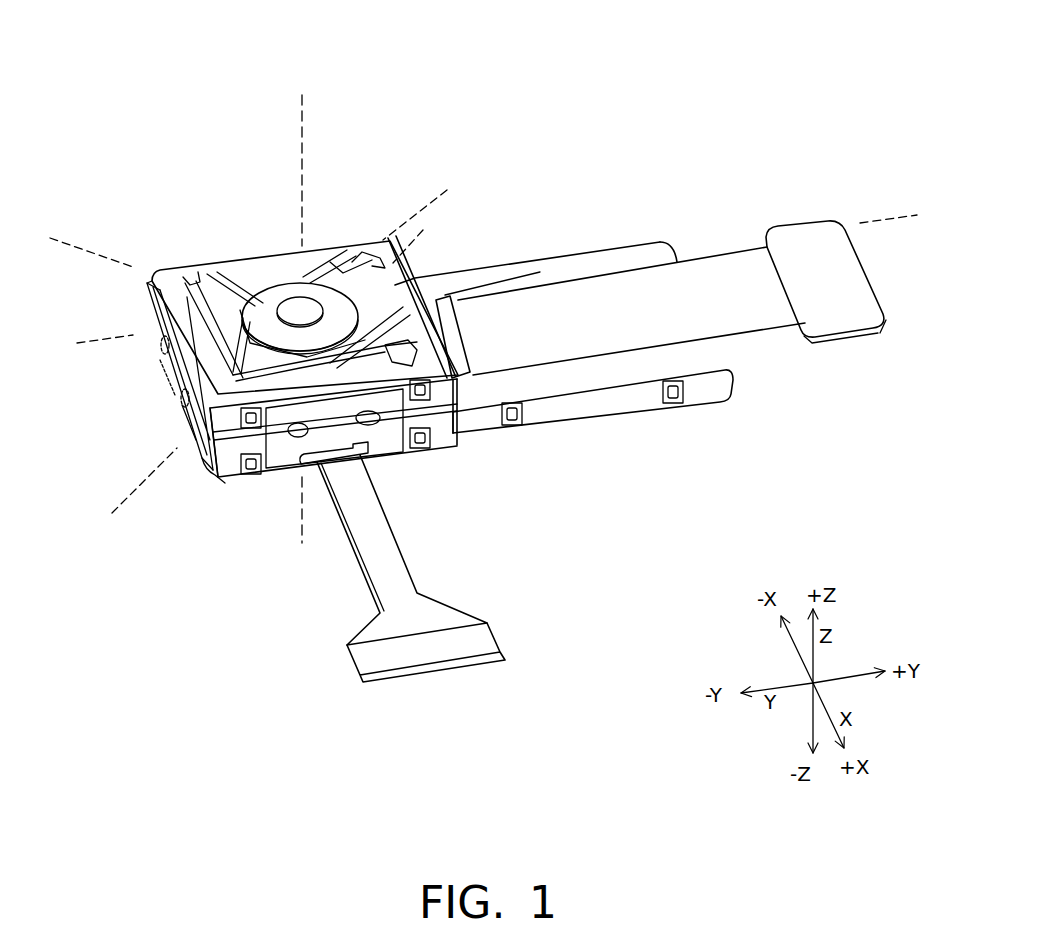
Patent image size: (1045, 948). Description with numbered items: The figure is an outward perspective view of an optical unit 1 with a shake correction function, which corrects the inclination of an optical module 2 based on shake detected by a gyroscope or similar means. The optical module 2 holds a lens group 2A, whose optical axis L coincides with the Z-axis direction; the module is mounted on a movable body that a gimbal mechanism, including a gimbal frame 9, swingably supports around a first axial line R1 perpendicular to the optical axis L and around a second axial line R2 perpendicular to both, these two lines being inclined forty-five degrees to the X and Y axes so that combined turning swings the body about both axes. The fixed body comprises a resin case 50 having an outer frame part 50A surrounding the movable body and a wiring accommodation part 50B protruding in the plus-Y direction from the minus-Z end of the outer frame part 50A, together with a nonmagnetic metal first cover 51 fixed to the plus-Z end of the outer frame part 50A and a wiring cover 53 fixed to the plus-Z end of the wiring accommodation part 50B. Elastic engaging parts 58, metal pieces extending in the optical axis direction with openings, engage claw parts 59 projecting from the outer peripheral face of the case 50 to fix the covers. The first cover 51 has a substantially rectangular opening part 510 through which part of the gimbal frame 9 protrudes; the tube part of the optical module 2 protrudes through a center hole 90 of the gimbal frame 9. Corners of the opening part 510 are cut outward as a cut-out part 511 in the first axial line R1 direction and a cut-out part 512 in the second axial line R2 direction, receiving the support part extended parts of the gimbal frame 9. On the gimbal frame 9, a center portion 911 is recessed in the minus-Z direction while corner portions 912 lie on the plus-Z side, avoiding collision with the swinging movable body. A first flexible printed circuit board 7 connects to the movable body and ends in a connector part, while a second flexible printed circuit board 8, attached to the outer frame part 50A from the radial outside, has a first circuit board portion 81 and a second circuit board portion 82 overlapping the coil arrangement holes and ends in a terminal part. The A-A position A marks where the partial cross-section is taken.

The optical unit with a shake correction function 1 is at (647, 100).
The optical module 2 is at (273, 297).
The lens group 2A is at (301, 311).
The first flexible printed circuit board 7 is at (740, 312).
The second flexible printed circuit board 8 is at (405, 570).
The gimbal frame 9 is at (253, 292).
The case 50 is at (667, 543).
The outer frame part 50A is at (450, 437).
The wiring accommodation part 50B is at (605, 413).
The first cover 51 is at (190, 320).
The wiring cover 53 is at (648, 240).
The elastic engaging part 58 is at (258, 480).
The claw part 59 is at (246, 477).
The first circuit board portion 81 is at (173, 373).
The second circuit board portion 82 is at (282, 462).
The center hole 90 is at (187, 423).
The opening part 510 is at (414, 278).
The cut-out part 511 is at (372, 255).
The cut-out part 512 is at (175, 278).
The center portion 911 is at (343, 270).
The corner portions 912 is at (213, 290).
The optical axis L is at (303, 118).
The first axial line R1 is at (445, 183).
The second axial line R2 is at (62, 235).
The A-A position A is at (86, 348).